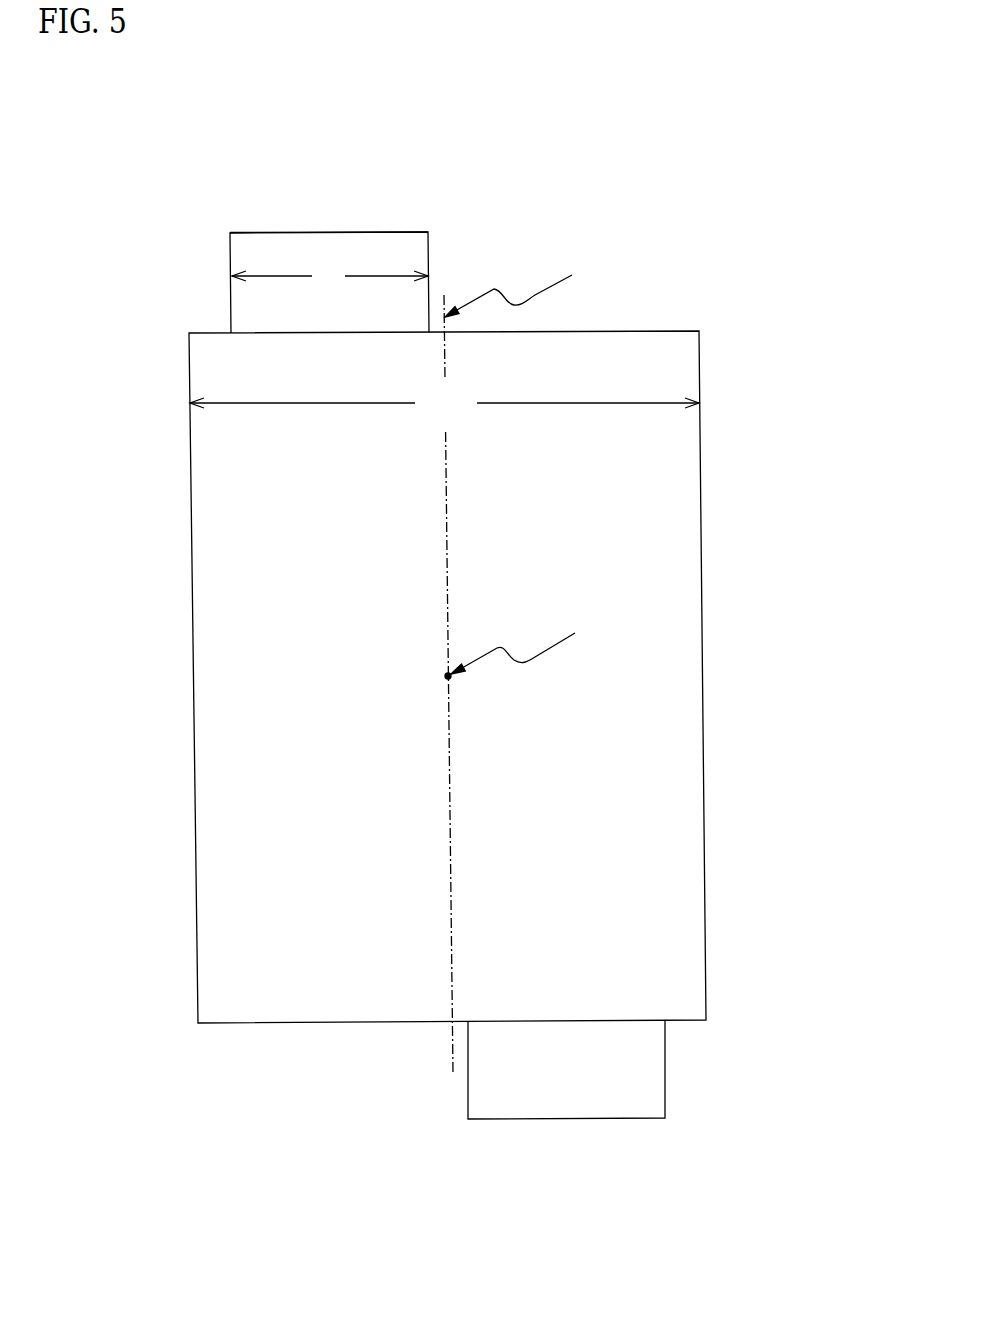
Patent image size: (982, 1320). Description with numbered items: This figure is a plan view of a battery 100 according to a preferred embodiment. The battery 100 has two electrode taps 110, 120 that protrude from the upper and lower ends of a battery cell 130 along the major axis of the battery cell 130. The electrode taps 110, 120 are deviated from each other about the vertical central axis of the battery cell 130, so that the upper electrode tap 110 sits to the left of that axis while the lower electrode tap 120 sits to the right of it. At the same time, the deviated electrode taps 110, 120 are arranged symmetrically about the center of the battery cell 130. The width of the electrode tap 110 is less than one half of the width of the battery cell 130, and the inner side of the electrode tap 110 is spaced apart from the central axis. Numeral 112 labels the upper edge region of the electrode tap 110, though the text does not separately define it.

The battery 100 is at (93, 129).
The electrode tap 110 is at (246, 305).
The top surface of upper protrusion 112 is at (430, 246).
The electrode tap 120 is at (651, 1076).
The battery cell 130 is at (687, 695).